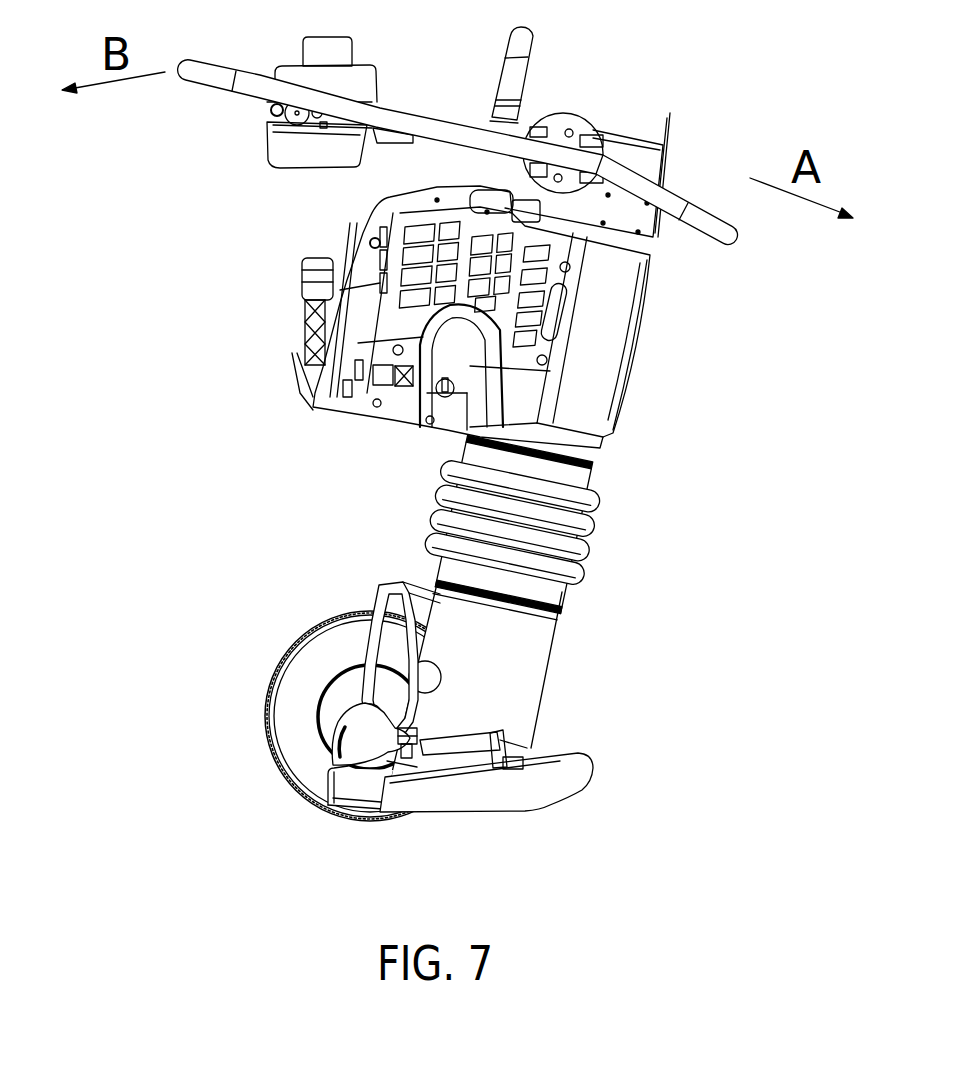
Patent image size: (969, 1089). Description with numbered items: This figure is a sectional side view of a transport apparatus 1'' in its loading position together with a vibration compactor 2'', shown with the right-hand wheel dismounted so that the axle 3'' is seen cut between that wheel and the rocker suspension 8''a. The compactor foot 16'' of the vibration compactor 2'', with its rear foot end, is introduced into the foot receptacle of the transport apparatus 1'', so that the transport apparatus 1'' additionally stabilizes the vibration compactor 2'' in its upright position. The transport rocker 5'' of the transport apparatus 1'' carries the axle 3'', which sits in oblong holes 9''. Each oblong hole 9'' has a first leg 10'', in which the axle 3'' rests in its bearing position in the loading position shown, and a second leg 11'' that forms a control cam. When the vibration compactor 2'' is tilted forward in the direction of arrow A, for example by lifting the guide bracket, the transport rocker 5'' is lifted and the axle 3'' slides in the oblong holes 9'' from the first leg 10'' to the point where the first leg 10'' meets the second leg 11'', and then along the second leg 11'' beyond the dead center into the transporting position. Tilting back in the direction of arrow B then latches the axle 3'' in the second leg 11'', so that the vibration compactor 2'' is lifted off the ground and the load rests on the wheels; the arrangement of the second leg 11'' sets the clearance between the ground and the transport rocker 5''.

The transport apparatus 1'' is at (271, 757).
The vibration compactor 2'' is at (560, 317).
The axle 3'' is at (359, 640).
The transport rocker 5'' is at (290, 791).
The rocker suspension 8''a is at (390, 545).
The oblong holes 9'' is at (271, 701).
The first leg 10'' is at (339, 672).
The second leg 11'' is at (557, 721).
The compactor foot 16'' is at (612, 772).